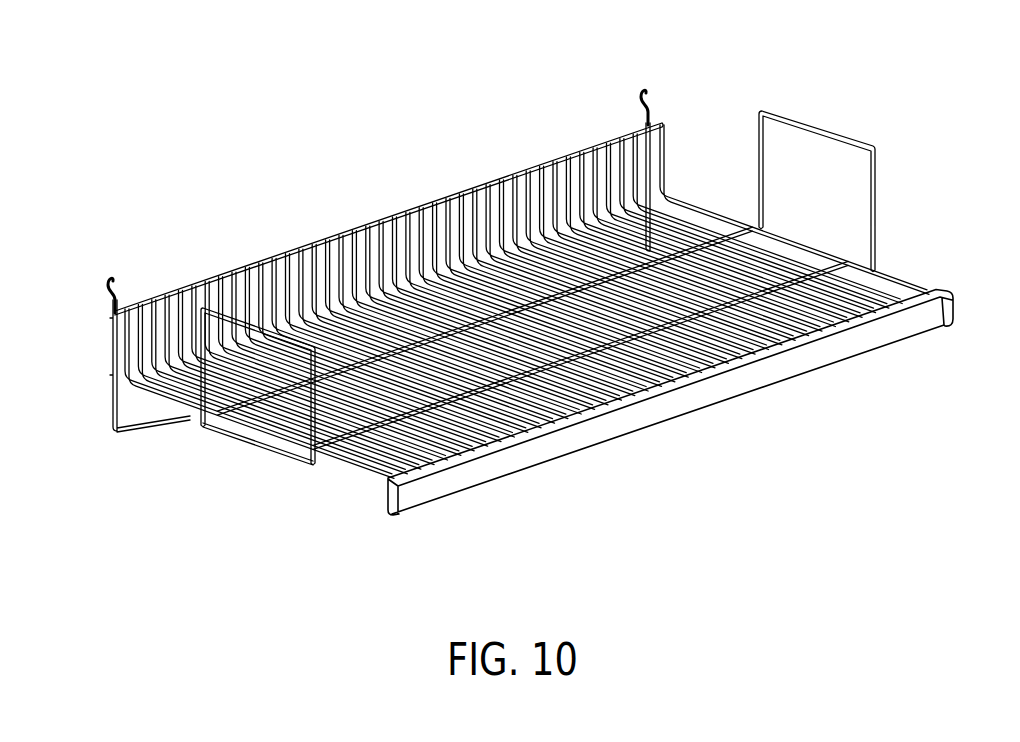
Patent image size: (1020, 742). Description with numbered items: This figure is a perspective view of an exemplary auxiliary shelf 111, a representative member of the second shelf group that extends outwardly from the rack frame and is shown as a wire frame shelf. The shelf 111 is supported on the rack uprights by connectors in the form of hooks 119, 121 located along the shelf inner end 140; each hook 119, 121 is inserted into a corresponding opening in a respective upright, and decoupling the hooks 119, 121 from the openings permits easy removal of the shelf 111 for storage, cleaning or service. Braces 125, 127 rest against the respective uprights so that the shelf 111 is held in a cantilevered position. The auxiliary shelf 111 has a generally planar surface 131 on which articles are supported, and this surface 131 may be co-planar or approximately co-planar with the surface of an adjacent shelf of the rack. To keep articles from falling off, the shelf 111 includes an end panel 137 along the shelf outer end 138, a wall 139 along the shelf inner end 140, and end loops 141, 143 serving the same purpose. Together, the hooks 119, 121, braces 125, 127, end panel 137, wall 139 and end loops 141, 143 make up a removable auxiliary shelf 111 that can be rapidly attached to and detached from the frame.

The auxiliary shelf 111 is at (254, 224).
The hook 119 is at (118, 292).
The hook 121 is at (649, 102).
The brace 125 is at (112, 412).
The brace 127 is at (681, 243).
The generally planar surface 131 is at (383, 420).
The end panel 137 is at (627, 436).
The shelf outer end 138 is at (392, 536).
The wall 139 is at (367, 226).
The shelf inner end 140 is at (90, 355).
The end loop 141 is at (293, 333).
The end loop 143 is at (818, 128).